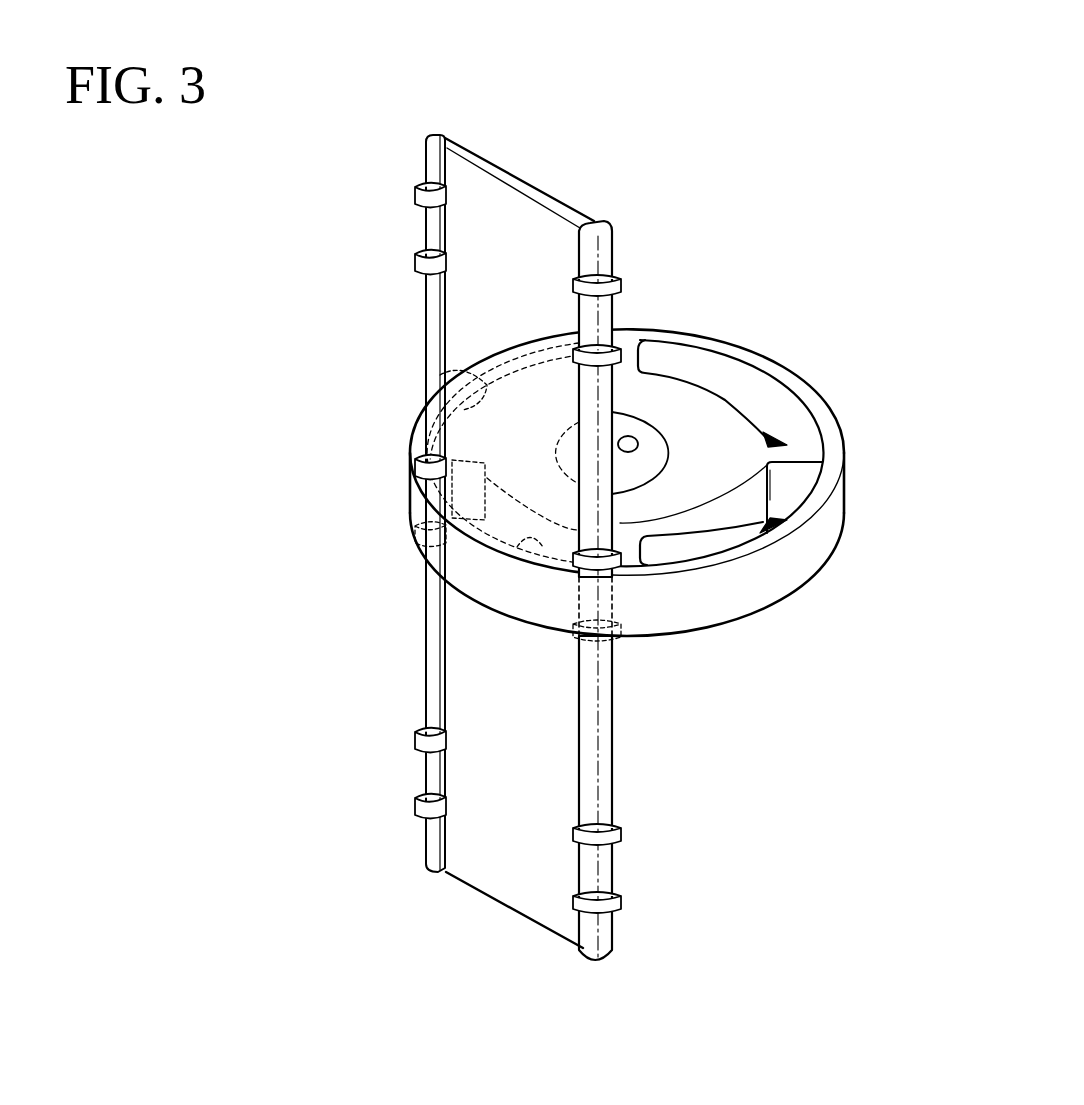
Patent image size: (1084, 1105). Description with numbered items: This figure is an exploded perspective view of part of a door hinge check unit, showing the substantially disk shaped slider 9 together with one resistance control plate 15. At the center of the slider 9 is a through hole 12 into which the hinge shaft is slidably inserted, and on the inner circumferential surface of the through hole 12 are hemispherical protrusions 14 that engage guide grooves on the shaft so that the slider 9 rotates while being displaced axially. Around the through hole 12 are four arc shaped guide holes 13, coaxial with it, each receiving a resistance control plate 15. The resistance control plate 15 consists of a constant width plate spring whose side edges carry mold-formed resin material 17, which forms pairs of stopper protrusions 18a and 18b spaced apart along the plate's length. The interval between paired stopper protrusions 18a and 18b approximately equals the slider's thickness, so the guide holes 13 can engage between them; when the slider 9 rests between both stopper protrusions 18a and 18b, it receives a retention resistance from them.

The slider 9 is at (810, 548).
The through hole 12 is at (680, 456).
The arc shaped guide holes 13 is at (455, 385).
The hemispherical protrusions 14 is at (638, 450).
The resistance control plate 15 is at (544, 191).
The resin material 17 is at (591, 742).
The stopper protrusion 18a is at (578, 268).
The stopper protrusion 18b is at (578, 333).